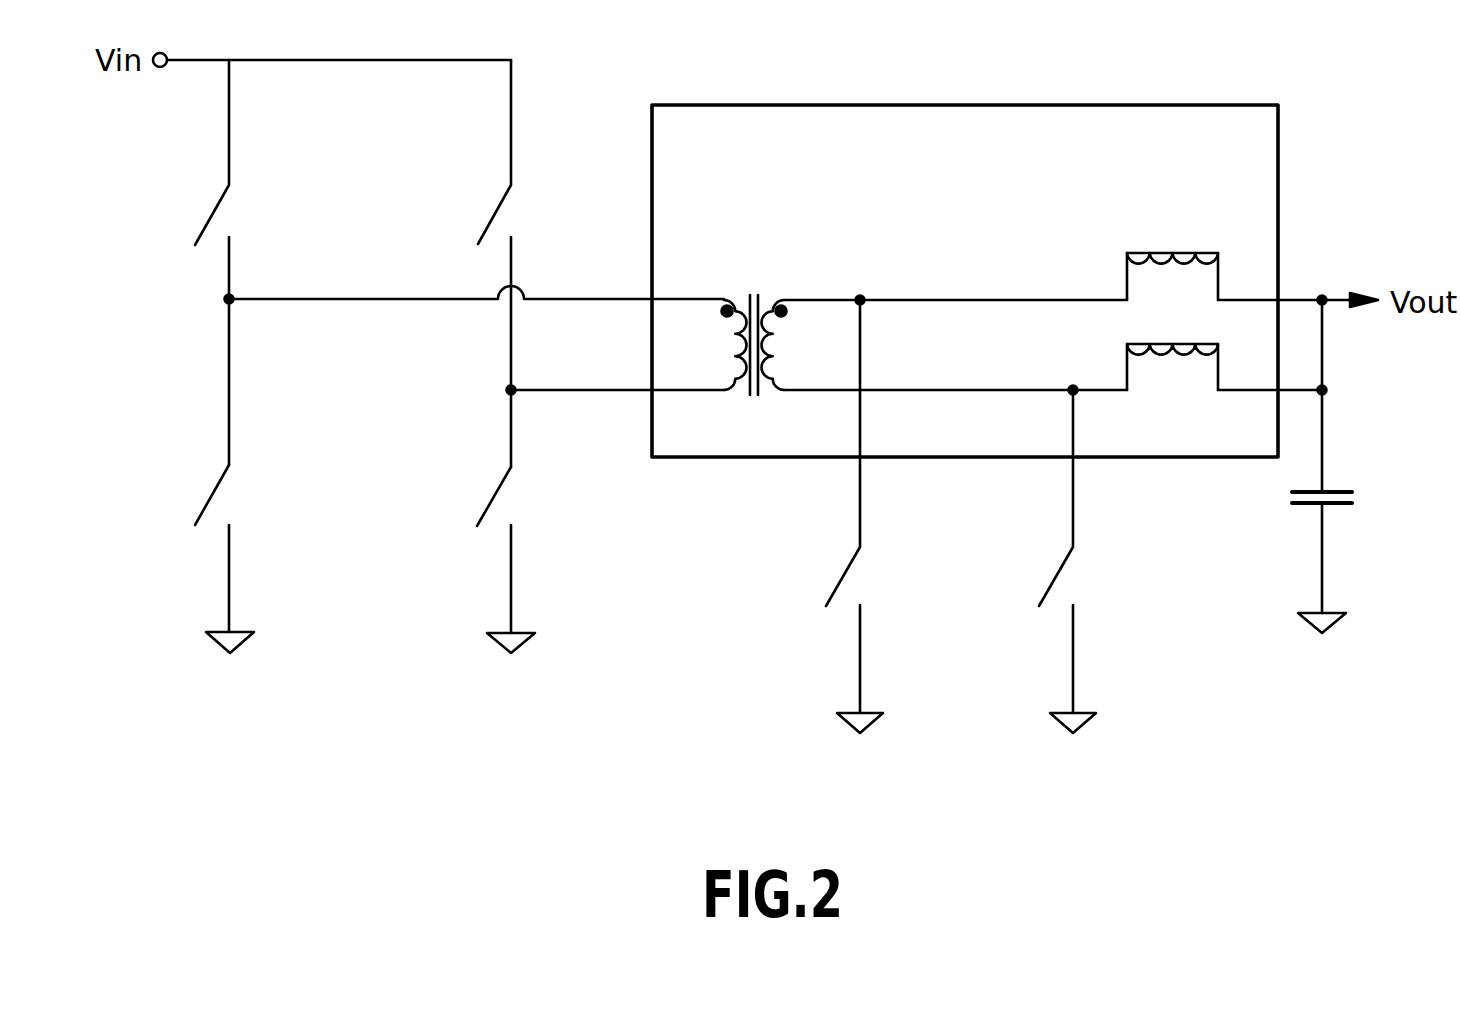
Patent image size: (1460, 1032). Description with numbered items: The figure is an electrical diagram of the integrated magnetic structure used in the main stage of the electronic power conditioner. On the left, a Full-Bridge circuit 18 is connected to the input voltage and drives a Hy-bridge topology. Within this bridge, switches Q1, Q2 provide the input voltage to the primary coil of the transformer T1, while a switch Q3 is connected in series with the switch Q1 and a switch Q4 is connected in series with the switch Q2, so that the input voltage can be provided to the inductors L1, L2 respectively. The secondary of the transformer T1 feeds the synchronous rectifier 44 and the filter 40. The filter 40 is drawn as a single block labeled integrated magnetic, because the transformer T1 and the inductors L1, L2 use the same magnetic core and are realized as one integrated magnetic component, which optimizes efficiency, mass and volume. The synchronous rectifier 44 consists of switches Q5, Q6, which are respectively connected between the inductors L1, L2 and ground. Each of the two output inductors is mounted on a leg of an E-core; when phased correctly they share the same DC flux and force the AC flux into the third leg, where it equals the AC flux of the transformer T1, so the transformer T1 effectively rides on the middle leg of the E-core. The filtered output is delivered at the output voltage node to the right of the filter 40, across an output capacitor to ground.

The Full-Bridge circuit 18 is at (367, 668).
The filter 40 is at (1255, 162).
The synchronous rectifier 44 is at (983, 668).
The switch Q1 is at (243, 262).
The switch Q2 is at (523, 263).
The switch Q3 is at (243, 559).
The switch Q4 is at (522, 560).
The switch Q5 is at (873, 516).
The switch Q6 is at (1087, 561).
The transformer T1 is at (754, 322).
The inductor L1 is at (1172, 255).
The inductor L2 is at (1172, 387).